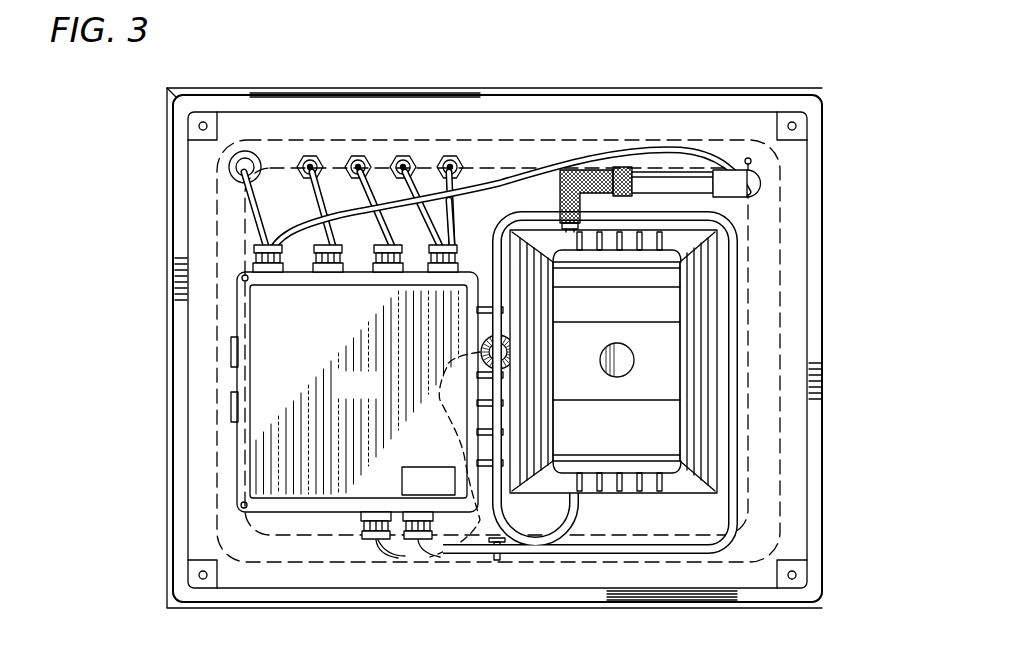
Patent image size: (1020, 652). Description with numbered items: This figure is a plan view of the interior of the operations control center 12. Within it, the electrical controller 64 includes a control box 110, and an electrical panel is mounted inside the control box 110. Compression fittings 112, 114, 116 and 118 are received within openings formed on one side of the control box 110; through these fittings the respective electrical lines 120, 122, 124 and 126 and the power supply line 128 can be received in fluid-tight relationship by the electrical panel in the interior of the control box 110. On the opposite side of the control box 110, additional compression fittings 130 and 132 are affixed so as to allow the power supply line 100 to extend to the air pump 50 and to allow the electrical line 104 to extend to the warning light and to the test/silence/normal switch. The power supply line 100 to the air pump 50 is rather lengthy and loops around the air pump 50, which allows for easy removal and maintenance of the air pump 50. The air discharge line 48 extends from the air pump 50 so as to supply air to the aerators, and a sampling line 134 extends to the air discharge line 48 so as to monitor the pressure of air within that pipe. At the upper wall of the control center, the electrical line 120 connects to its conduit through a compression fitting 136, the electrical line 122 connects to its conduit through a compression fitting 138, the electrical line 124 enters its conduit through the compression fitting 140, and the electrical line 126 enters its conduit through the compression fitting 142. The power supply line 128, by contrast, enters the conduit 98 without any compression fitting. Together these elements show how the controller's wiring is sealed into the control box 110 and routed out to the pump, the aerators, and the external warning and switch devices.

The operations control center 12 is at (841, 377).
The air discharge line 48 is at (770, 175).
The air pump 50 is at (677, 353).
The electrical controller 64 is at (258, 462).
The conduit 98 is at (236, 176).
The power supply line 100 is at (660, 550).
The electrical line 104 is at (385, 548).
The control box 110 is at (376, 397).
The compression fitting 112 is at (452, 222).
The compression fitting 114 is at (388, 275).
The compression fitting 116 is at (320, 272).
The compression fitting 118 is at (253, 290).
The electrical line 120 is at (476, 162).
The electrical line 122 is at (420, 173).
The electrical line 124 is at (348, 175).
The electrical line 126 is at (300, 172).
The power supply line 128 is at (255, 224).
The compression fitting 130 is at (362, 540).
The compression fitting 132 is at (416, 542).
The sampling line 134 is at (647, 147).
The compression fitting 136 is at (455, 152).
The compression fitting 138 is at (400, 152).
The compression fitting 140 is at (360, 152).
The compression fitting 142 is at (300, 150).